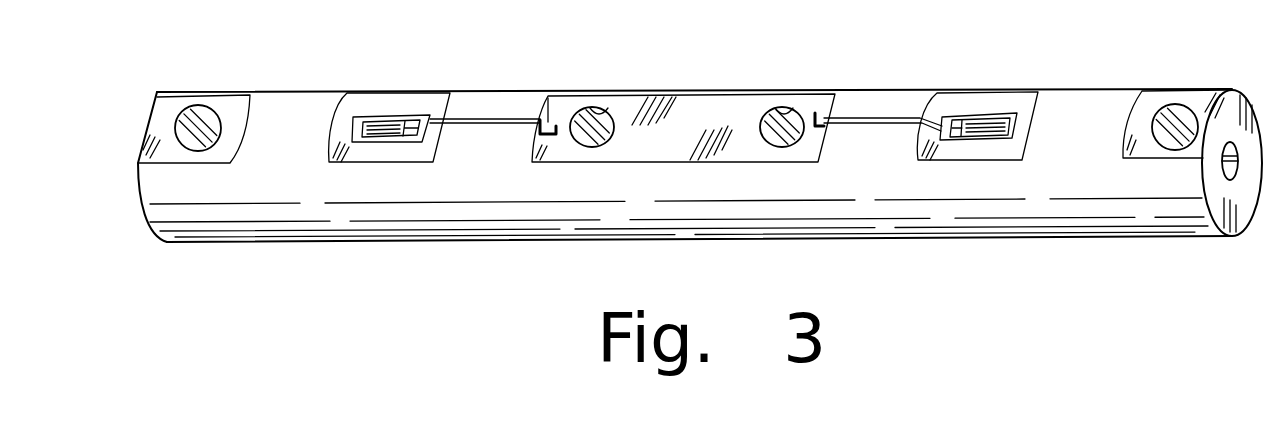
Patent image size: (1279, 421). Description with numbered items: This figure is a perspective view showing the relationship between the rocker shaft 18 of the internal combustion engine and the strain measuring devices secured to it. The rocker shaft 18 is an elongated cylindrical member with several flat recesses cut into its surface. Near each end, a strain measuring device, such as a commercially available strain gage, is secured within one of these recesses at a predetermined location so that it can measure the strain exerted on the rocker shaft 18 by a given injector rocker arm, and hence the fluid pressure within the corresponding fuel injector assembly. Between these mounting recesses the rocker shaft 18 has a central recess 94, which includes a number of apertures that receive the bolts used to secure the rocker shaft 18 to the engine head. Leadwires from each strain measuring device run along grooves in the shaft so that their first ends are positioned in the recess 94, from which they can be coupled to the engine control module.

The rocker shaft 18 is at (1090, 115).
The recess 94 is at (689, 112).